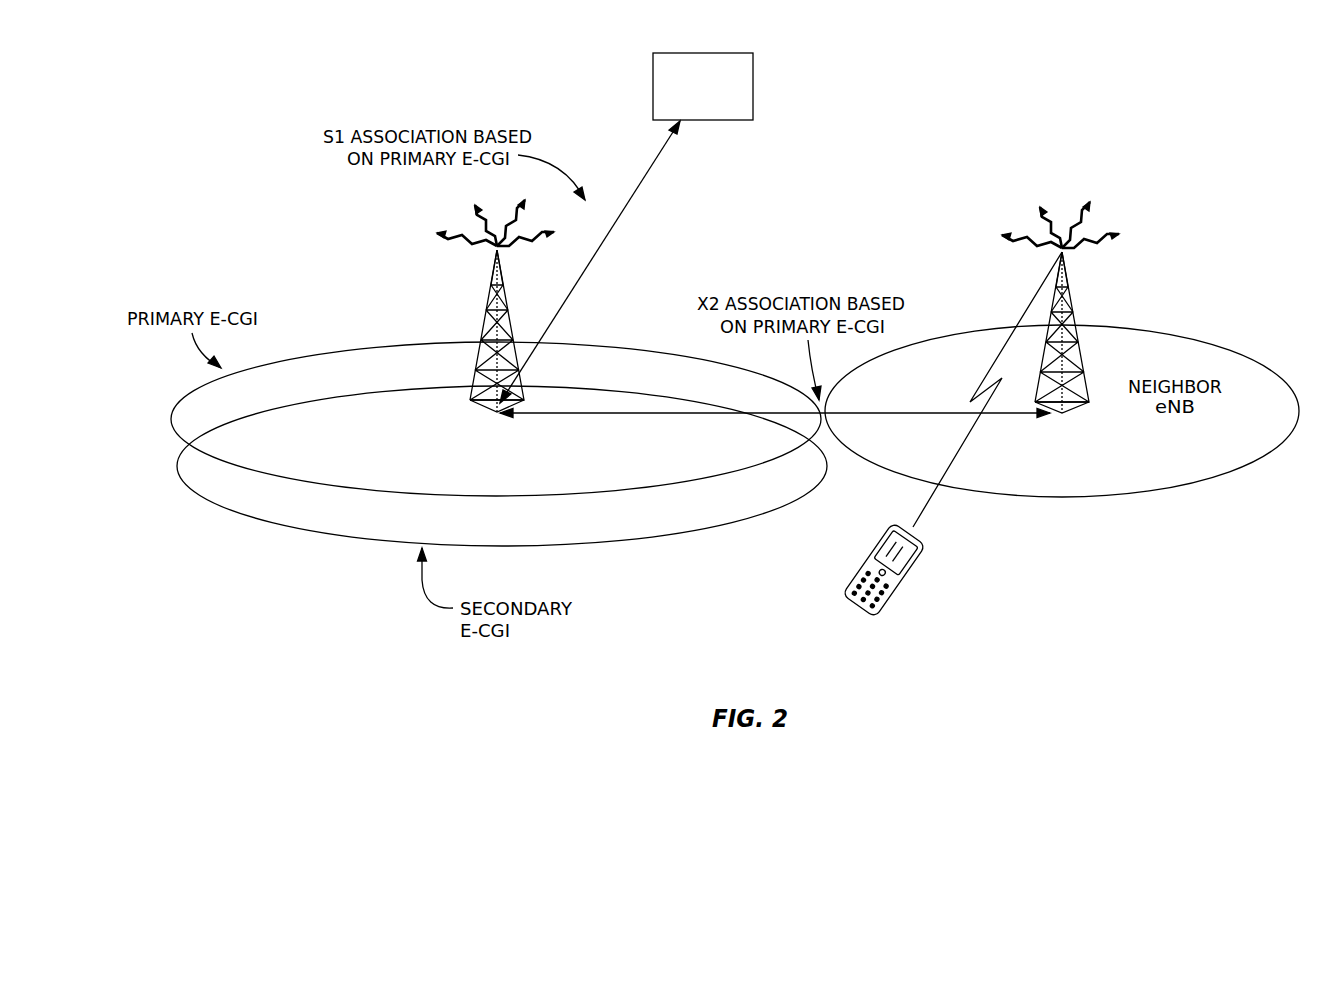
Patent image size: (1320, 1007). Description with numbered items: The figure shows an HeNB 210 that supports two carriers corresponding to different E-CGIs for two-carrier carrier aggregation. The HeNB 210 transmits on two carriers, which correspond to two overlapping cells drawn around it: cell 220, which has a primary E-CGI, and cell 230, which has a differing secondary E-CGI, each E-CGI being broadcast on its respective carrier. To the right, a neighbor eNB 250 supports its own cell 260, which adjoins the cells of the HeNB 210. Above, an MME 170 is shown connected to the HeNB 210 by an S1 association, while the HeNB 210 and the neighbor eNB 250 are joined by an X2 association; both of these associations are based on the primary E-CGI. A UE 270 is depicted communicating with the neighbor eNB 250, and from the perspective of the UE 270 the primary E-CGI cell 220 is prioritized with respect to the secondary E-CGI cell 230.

The MME 170 is at (717, 105).
The HeNB 210 is at (483, 308).
The cell 220 is at (172, 424).
The cell 230 is at (210, 502).
The neighbor eNB 250 is at (1072, 298).
The cell 260 is at (1210, 478).
The UE 270 is at (907, 577).